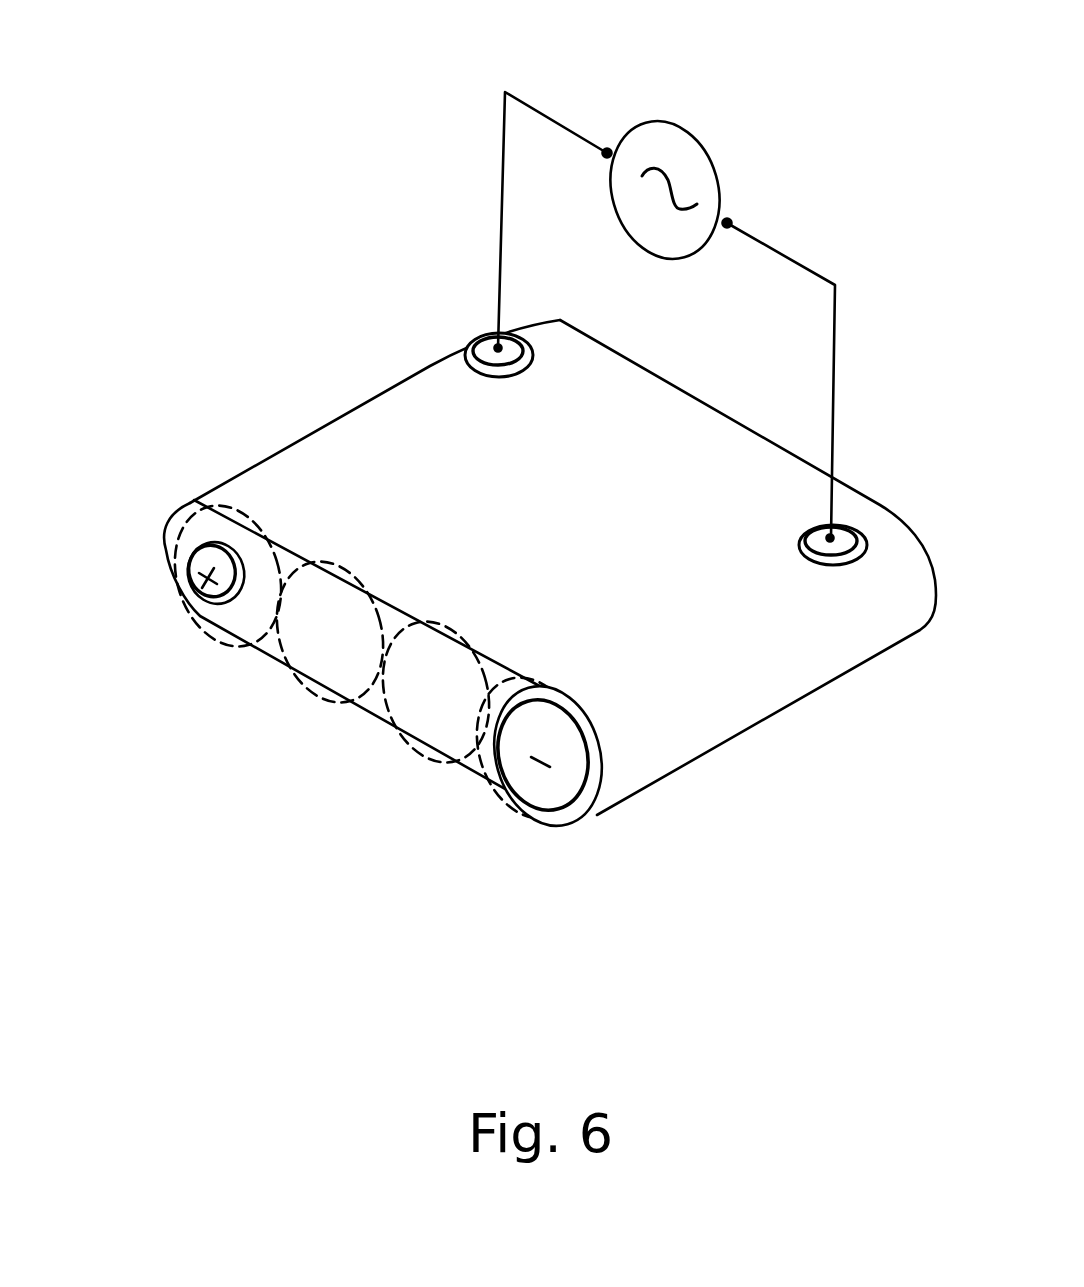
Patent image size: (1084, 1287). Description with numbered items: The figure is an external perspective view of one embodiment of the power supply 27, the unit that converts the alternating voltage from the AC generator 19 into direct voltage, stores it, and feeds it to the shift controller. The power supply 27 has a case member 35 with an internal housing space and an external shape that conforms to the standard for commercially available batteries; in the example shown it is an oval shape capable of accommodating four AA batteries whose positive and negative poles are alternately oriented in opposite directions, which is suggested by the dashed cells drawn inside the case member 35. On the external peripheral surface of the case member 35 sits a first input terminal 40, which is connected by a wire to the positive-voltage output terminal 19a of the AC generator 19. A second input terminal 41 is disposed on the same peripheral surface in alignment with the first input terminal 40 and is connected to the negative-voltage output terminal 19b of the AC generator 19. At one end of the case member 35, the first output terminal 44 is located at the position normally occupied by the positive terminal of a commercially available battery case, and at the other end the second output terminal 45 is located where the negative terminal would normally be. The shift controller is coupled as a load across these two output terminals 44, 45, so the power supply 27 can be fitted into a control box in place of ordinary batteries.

The AC generator 19 is at (700, 150).
The positive-voltage output terminal 19a is at (607, 153).
The negative-voltage output terminal 19b is at (730, 222).
The power supply 27 is at (547, 570).
The case member 35 is at (367, 437).
The first input terminal 40 is at (507, 337).
The second input terminal 41 is at (847, 530).
The first output terminal 44 is at (197, 600).
The second output terminal 45 is at (540, 790).